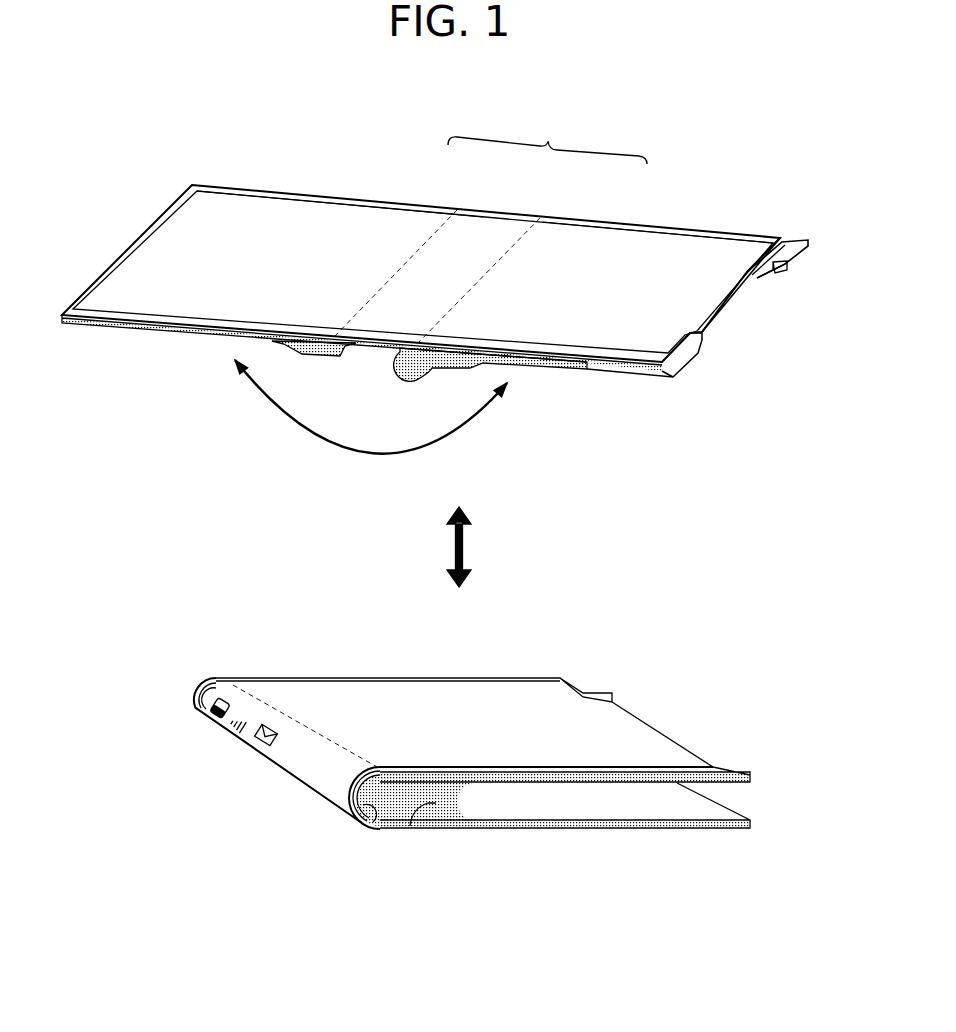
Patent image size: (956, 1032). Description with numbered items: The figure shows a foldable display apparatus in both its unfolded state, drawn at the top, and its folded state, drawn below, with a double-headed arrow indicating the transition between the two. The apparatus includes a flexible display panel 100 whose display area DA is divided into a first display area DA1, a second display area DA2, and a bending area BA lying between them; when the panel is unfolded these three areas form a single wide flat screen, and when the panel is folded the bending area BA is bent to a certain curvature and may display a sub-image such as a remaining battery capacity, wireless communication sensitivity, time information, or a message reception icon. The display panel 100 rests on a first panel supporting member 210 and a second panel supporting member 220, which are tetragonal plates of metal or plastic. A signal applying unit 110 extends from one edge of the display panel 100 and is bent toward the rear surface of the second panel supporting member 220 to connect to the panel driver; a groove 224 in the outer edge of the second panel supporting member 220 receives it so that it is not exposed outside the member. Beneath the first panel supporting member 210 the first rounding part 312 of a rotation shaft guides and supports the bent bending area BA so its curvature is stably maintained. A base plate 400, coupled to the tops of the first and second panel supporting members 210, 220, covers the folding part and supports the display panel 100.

The display panel 100 is at (723, 242).
The signal applying unit 110 is at (730, 308).
The first panel supporting member 210 is at (160, 330).
The second panel supporting member 220 is at (580, 365).
The groove 224 is at (770, 272).
The first rounding part 312 is at (368, 827).
The base plate 400 is at (780, 240).
The display area DA is at (547, 138).
The first display area DA1 is at (385, 223).
The second display area DA2 is at (593, 227).
The bending area BA is at (492, 225).